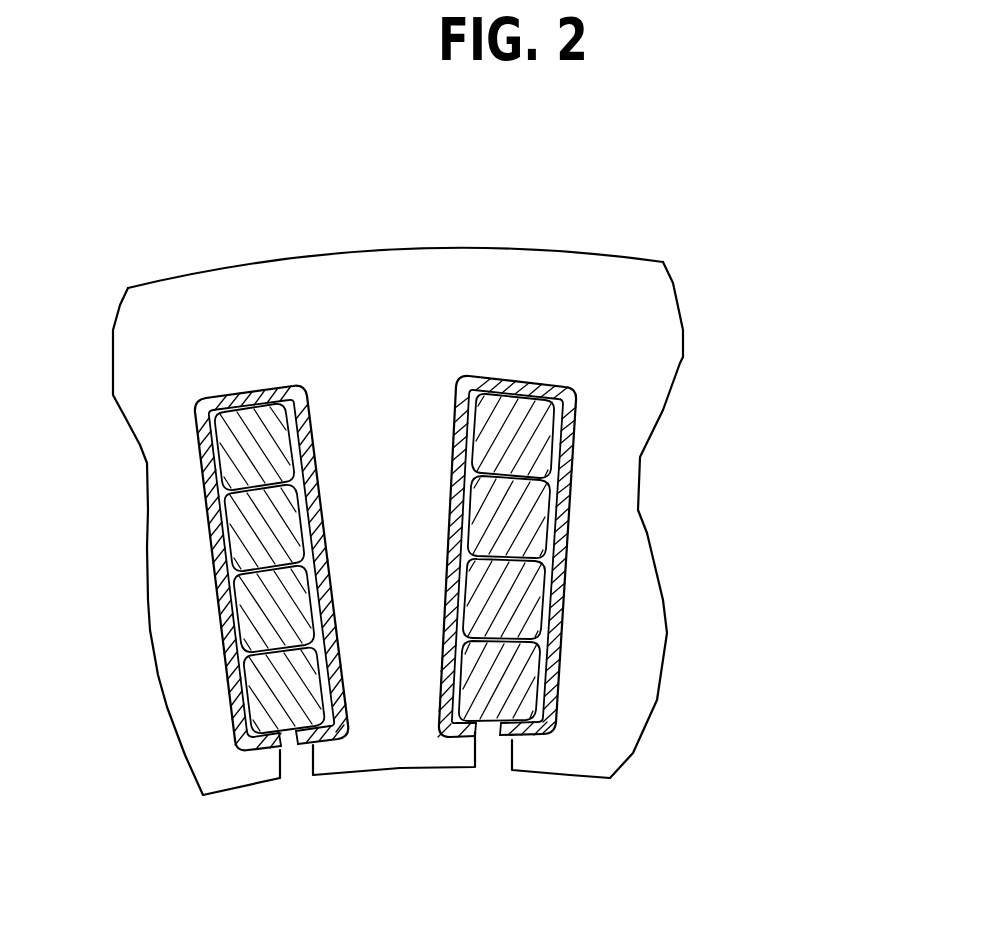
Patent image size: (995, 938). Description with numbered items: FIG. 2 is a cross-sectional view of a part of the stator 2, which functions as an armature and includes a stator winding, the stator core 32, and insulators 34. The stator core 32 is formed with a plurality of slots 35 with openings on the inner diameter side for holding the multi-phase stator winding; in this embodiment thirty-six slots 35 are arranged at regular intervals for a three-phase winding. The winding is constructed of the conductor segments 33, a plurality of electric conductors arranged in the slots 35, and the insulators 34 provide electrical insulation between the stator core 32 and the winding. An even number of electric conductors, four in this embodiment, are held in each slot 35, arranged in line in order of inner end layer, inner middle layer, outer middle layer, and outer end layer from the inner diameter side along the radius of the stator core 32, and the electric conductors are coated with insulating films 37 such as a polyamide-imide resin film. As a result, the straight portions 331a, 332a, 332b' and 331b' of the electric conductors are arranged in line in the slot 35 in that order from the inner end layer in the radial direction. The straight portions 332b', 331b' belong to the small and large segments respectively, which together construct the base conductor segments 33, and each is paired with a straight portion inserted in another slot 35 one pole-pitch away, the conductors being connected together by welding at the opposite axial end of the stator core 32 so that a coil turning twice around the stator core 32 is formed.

The stator 2 is at (651, 192).
The stator core 32 is at (418, 287).
The conductor segments 33 is at (665, 557).
The electric conductor in the inner end layer 331a is at (625, 681).
The electric conductor in the outer end layer 331b' is at (631, 436).
The electric conductor in the inner middle layer 332a is at (513, 615).
The electric conductor in the outer middle layer 332b' is at (629, 517).
The insulator 34 is at (553, 387).
The slot 35 is at (492, 738).
The insulating film 37 is at (243, 716).